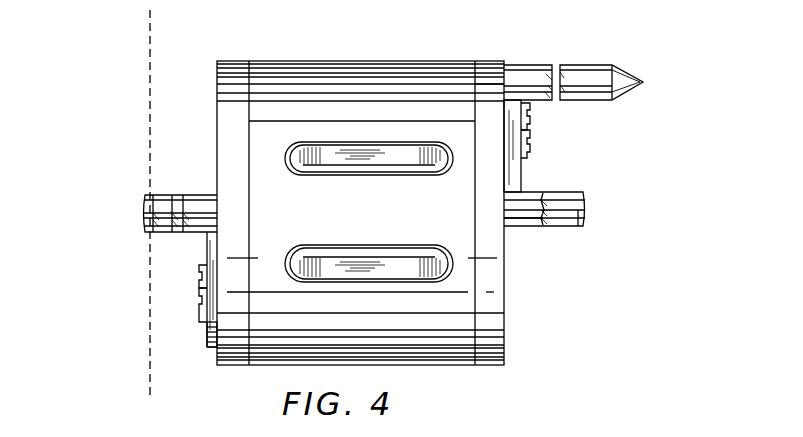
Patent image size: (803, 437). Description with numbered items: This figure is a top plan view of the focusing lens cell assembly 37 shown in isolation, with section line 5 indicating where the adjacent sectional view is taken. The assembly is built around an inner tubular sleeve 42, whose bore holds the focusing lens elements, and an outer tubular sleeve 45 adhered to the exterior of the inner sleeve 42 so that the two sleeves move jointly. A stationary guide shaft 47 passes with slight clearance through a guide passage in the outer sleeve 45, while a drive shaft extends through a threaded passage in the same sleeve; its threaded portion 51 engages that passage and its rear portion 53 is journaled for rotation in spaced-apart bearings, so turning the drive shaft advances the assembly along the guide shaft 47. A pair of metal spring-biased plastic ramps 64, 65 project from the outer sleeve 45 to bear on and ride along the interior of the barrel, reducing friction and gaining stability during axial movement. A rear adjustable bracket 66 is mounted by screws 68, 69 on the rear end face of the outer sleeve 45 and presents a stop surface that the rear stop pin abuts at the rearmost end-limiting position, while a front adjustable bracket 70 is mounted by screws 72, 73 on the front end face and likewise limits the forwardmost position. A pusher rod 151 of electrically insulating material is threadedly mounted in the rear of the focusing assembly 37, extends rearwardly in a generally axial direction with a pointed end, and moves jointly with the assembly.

The section line 5- 5 is at (150, 23).
The focusing lens cell assembly 37 is at (568, 50).
The inner tubular sleeve 42 is at (493, 62).
The outer tubular sleeve 45 is at (397, 68).
The guide shaft 47 is at (523, 221).
The threaded portion 51 is at (171, 236).
The rear portion 53 is at (578, 230).
The spring-biased plastic ramp 64 is at (376, 271).
The spring-biased plastic ramp 65 is at (379, 156).
The rear adjustable bracket 66 is at (513, 173).
The screw 68 is at (526, 158).
The screw 69 is at (526, 122).
The front adjustable bracket 70 is at (212, 347).
The screw 72 is at (198, 281).
The screw 73 is at (198, 312).
The pusher rod 151 is at (593, 66).